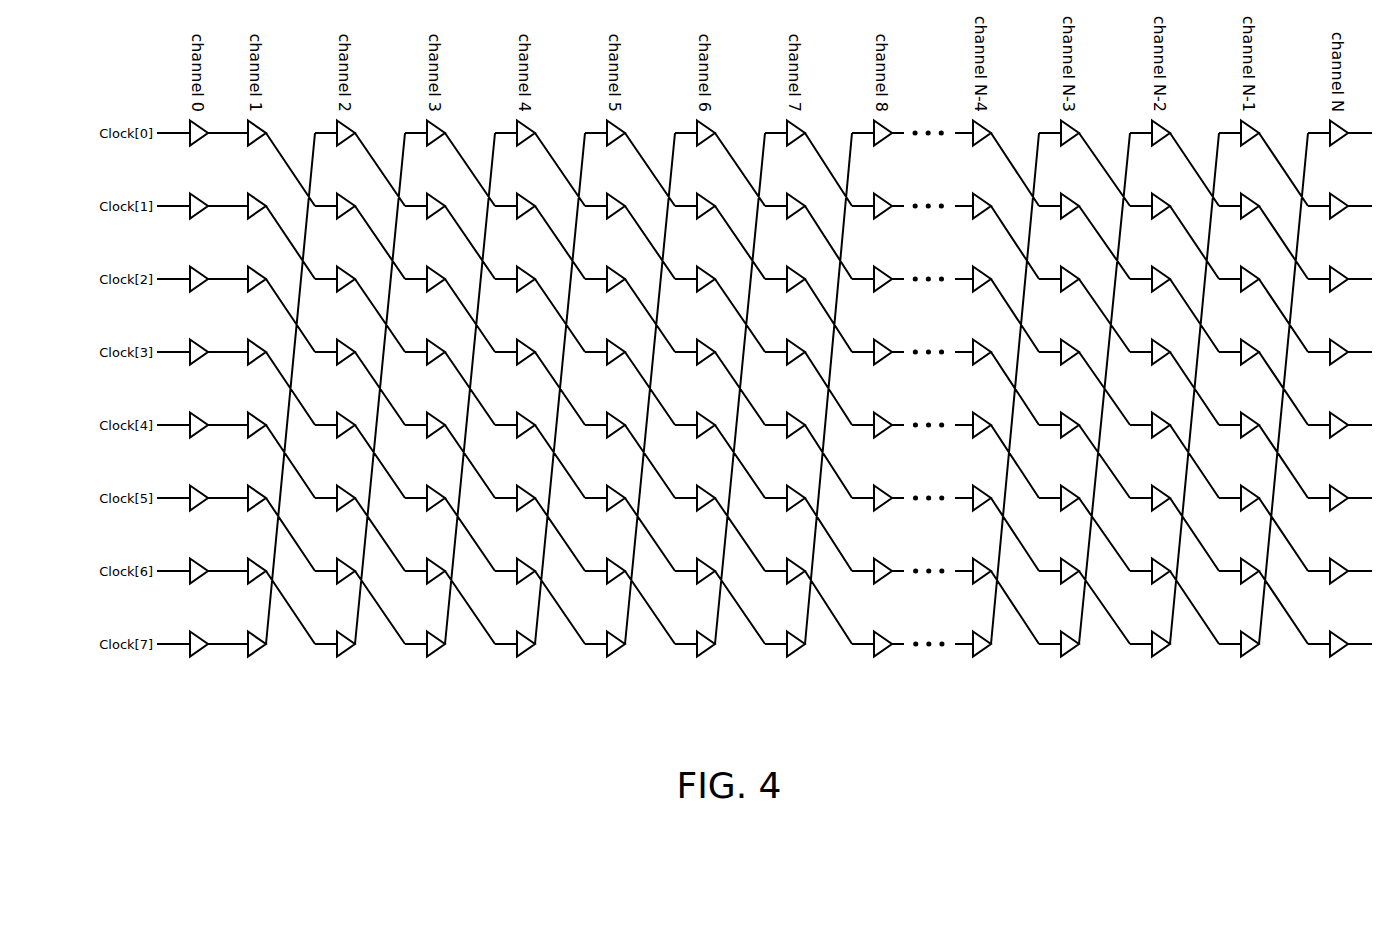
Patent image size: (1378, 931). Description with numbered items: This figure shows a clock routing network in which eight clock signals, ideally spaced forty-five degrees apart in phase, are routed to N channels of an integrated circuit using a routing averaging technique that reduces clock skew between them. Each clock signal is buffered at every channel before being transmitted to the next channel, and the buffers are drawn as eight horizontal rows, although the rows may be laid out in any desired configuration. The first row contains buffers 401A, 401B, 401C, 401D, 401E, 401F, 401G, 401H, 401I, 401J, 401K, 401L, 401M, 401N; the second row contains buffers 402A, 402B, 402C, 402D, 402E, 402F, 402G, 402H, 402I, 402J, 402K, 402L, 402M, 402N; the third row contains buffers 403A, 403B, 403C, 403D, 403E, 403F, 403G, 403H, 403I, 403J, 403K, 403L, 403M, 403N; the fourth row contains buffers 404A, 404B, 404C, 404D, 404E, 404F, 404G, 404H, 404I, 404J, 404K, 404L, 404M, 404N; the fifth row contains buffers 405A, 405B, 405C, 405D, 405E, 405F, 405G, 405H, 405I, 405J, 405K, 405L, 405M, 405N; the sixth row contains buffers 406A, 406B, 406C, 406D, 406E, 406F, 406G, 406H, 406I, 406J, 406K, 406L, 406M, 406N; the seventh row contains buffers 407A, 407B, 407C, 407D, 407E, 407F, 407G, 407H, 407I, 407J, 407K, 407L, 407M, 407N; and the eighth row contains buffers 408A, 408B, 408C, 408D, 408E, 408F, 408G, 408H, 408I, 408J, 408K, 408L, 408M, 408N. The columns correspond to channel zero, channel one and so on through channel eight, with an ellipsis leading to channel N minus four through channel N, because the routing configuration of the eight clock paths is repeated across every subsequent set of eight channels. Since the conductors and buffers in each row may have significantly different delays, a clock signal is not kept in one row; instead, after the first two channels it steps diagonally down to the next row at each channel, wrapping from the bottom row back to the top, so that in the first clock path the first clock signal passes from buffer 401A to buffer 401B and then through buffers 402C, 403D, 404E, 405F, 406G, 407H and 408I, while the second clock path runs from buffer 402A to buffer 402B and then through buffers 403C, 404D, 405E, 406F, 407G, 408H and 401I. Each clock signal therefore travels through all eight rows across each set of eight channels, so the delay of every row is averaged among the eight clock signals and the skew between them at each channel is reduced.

The buffer 401A is at (181, 147).
The buffer 401B is at (241, 147).
The buffer 401C is at (343, 147).
The buffer 401D is at (433, 147).
The buffer 401E is at (523, 147).
The buffer 401F is at (613, 147).
The buffer 401G is at (703, 147).
The buffer 401H is at (793, 147).
The buffer 401I is at (879, 147).
The buffer 401J is at (974, 147).
The buffer 401K is at (1067, 147).
The buffer 401L is at (1158, 147).
The buffer 401M is at (1247, 147).
The buffer 401N is at (1336, 147).
The buffer 402A is at (181, 220).
The buffer 402B is at (241, 220).
The buffer 402C is at (343, 220).
The buffer 402D is at (433, 220).
The buffer 402E is at (523, 220).
The buffer 402F is at (613, 220).
The buffer 402G is at (703, 220).
The buffer 402H is at (793, 220).
The buffer 402I is at (879, 220).
The buffer 402J is at (968, 220).
The buffer 402K is at (1067, 220).
The buffer 402L is at (1158, 220).
The buffer 402M is at (1247, 220).
The buffer 402N is at (1336, 220).
The buffer 403A is at (181, 293).
The buffer 403B is at (241, 293).
The buffer 403C is at (343, 293).
The buffer 403D is at (433, 293).
The buffer 403E is at (523, 293).
The buffer 403F is at (613, 293).
The buffer 403G is at (703, 293).
The buffer 403H is at (793, 293).
The buffer 403I is at (870, 293).
The buffer 403J is at (968, 293).
The buffer 403K is at (1067, 293).
The buffer 403L is at (1158, 293).
The buffer 403M is at (1247, 293).
The buffer 403N is at (1336, 293).
The buffer 404A is at (181, 366).
The buffer 404B is at (241, 366).
The buffer 404C is at (343, 366).
The buffer 404D is at (433, 366).
The buffer 404E is at (523, 366).
The buffer 404F is at (613, 366).
The buffer 404G is at (703, 366).
The buffer 404H is at (793, 366).
The buffer 404I is at (870, 366).
The buffer 404J is at (968, 366).
The buffer 404K is at (1067, 366).
The buffer 404L is at (1158, 366).
The buffer 404M is at (1247, 366).
The buffer 404N is at (1336, 366).
The buffer 405A is at (181, 439).
The buffer 405B is at (241, 439).
The buffer 405C is at (343, 439).
The buffer 405D is at (433, 439).
The buffer 405E is at (523, 439).
The buffer 405F is at (613, 439).
The buffer 405G is at (703, 439).
The buffer 405H is at (793, 439).
The buffer 405I is at (870, 439).
The buffer 405J is at (968, 439).
The buffer 405K is at (1067, 439).
The buffer 405L is at (1158, 439).
The buffer 405M is at (1247, 439).
The buffer 405N is at (1336, 439).
The buffer 406A is at (181, 512).
The buffer 406B is at (241, 512).
The buffer 406C is at (343, 512).
The buffer 406D is at (433, 512).
The buffer 406E is at (523, 512).
The buffer 406F is at (613, 512).
The buffer 406G is at (703, 512).
The buffer 406H is at (793, 512).
The buffer 406I is at (870, 512).
The buffer 406J is at (968, 512).
The buffer 406K is at (1067, 512).
The buffer 406L is at (1158, 512).
The buffer 406M is at (1247, 512).
The buffer 406N is at (1336, 512).
The buffer 407A is at (181, 585).
The buffer 407B is at (241, 585).
The buffer 407C is at (343, 585).
The buffer 407D is at (433, 585).
The buffer 407E is at (523, 585).
The buffer 407F is at (613, 585).
The buffer 407G is at (703, 585).
The buffer 407H is at (793, 585).
The buffer 407I is at (870, 585).
The buffer 407J is at (968, 585).
The buffer 407K is at (1067, 585).
The buffer 407L is at (1158, 585).
The buffer 407M is at (1247, 585).
The buffer 407N is at (1336, 585).
The buffer 408A is at (181, 658).
The buffer 408B is at (241, 658).
The buffer 408C is at (343, 658).
The buffer 408D is at (433, 658).
The buffer 408E is at (523, 658).
The buffer 408F is at (613, 658).
The buffer 408G is at (703, 658).
The buffer 408H is at (793, 658).
The buffer 408I is at (870, 658).
The buffer 408J is at (968, 658).
The buffer 408K is at (1067, 658).
The buffer 408L is at (1149, 658).
The buffer 408M is at (1237, 658).
The buffer 408N is at (1326, 658).